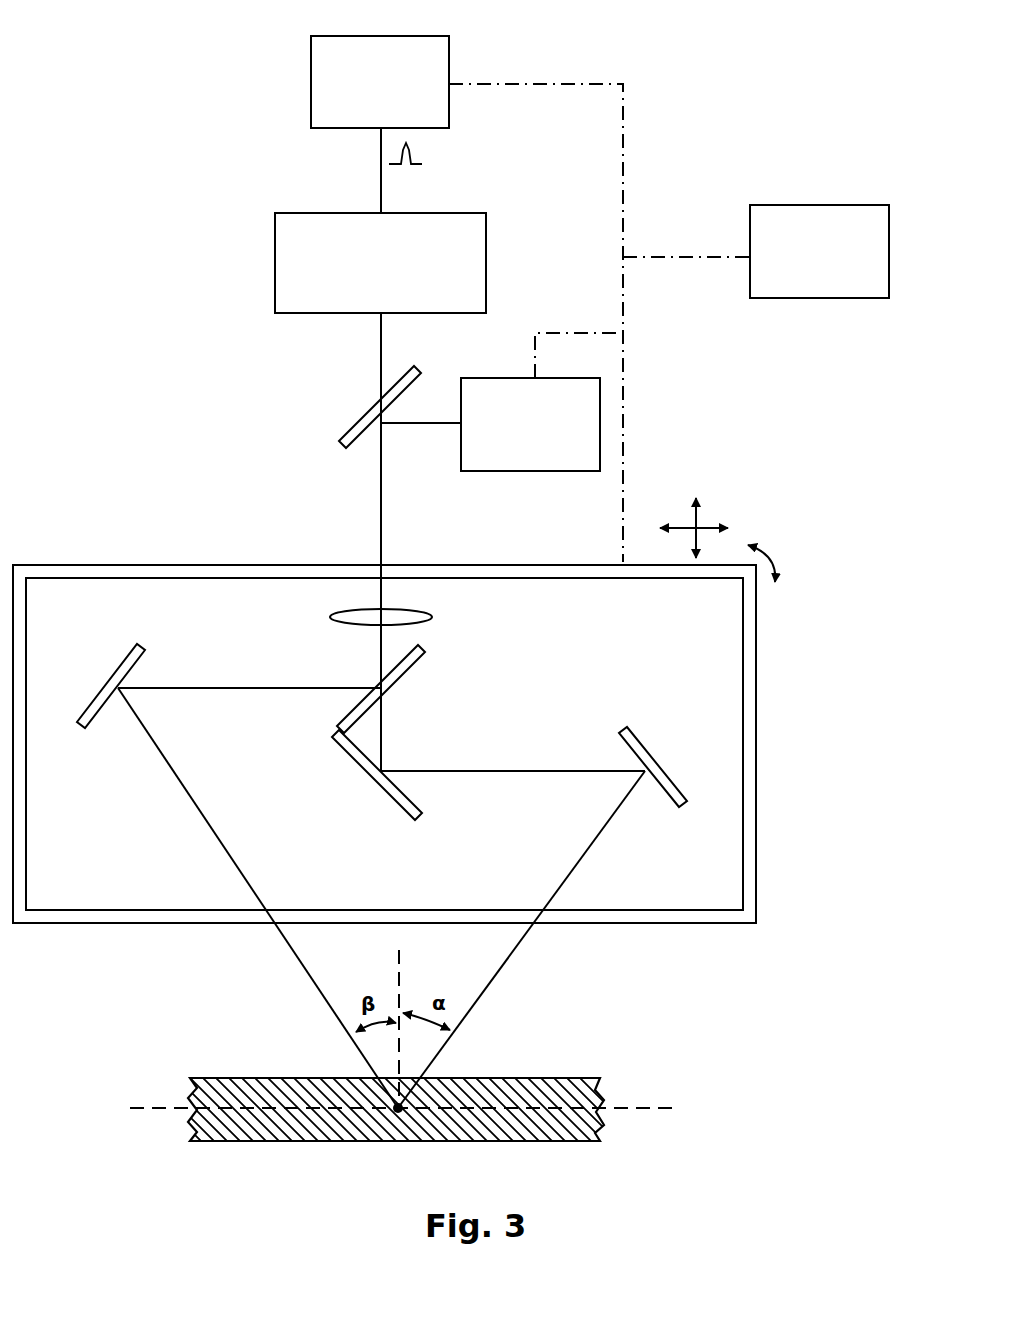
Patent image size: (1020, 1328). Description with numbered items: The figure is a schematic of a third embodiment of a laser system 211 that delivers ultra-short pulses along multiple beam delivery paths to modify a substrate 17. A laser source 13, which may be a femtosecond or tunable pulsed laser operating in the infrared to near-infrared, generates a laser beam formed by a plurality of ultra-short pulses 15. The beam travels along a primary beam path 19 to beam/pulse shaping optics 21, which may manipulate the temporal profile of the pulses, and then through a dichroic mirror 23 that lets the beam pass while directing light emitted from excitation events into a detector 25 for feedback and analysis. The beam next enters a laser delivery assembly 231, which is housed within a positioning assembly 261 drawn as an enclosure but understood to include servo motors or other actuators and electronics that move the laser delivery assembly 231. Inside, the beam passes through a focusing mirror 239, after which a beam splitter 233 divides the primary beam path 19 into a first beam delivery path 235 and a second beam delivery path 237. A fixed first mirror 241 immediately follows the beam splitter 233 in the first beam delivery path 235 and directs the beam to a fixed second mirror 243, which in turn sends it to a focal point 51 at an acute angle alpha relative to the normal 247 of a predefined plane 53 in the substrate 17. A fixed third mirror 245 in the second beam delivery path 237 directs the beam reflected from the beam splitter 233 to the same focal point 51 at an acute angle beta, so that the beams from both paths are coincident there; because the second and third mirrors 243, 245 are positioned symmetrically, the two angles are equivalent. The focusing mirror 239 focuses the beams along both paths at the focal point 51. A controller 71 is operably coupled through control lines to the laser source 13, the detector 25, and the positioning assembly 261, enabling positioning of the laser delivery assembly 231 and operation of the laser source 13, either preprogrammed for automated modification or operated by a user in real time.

The laser system 211 is at (150, 168).
The laser source 13 is at (449, 36).
The ultra-short pulses 15 is at (430, 152).
The primary beam path 19 is at (380, 183).
The beam/pulse shaping optics 21 is at (478, 213).
The dichroic mirror 23 is at (357, 425).
The detector 25 is at (600, 390).
The controller 71 is at (855, 205).
The laser delivery assembly 231 is at (284, 606).
The positioning assembly 261 is at (756, 656).
The focusing mirror 239 is at (428, 617).
The beam splitter 233 is at (420, 660).
The first beam delivery path 235 is at (383, 737).
The second beam delivery path 237 is at (250, 688).
The first mirror 241 is at (415, 801).
The second mirror 243 is at (633, 732).
The third mirror 245 is at (132, 648).
The normal 247 is at (401, 953).
The substrate 17 is at (546, 1079).
The predefined plane 53 is at (653, 1108).
The focal point 51 is at (398, 1113).